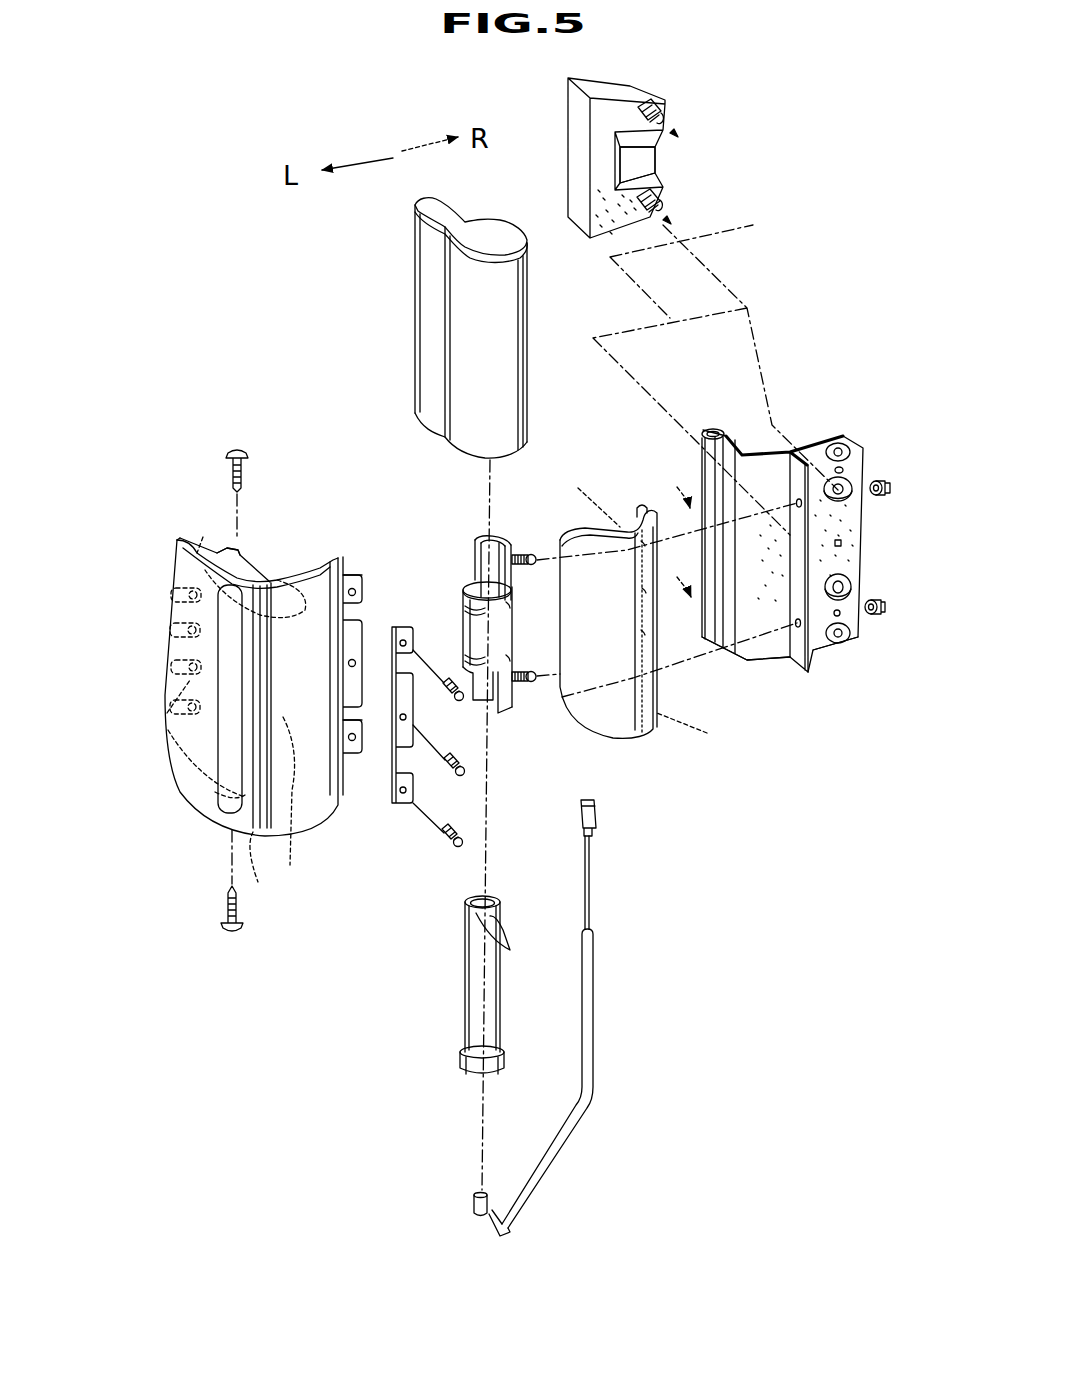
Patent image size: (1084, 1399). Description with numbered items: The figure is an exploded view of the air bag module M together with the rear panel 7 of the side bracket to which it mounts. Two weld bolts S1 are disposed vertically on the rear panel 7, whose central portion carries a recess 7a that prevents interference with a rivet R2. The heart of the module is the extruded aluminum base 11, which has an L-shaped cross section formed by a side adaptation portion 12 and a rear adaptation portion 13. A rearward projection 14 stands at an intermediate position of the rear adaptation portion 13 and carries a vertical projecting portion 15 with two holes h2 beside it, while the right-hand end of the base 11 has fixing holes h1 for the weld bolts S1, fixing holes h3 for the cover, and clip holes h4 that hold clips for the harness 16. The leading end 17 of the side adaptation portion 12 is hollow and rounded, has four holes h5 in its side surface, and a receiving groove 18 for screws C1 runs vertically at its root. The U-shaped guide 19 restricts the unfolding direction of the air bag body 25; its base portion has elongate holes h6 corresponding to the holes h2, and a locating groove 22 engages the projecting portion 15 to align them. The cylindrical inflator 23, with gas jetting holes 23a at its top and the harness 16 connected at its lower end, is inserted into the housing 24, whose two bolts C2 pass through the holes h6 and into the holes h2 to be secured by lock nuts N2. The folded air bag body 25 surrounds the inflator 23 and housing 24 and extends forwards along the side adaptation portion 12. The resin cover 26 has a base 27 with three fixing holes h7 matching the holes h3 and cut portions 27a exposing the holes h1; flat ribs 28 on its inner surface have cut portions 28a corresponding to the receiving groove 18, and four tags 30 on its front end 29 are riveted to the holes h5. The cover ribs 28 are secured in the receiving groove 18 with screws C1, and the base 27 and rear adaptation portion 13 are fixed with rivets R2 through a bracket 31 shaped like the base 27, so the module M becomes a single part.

The rear panel 7 is at (650, 98).
The recess 7a is at (645, 152).
The weld bolts S1 is at (660, 110).
The base 11 is at (799, 566).
The side adaptation portion 12 is at (750, 455).
The rear adaptation portion 13 is at (836, 440).
The rearward projection 14 is at (808, 670).
The projecting portion 15 is at (770, 640).
The harness 16 is at (592, 1017).
The leading end 17 is at (710, 429).
The receiving groove 18 is at (728, 434).
The guide 19 is at (616, 498).
The locating groove 22 is at (646, 510).
The inflator 23 is at (477, 985).
The gas jetting holes 23a is at (510, 949).
The housing 24 is at (453, 580).
The air bag body 25 is at (404, 332).
The cover 26 is at (215, 694).
The base 27 is at (373, 690).
The cut portions 27a is at (367, 607).
The rib 28 is at (247, 563).
The cut portion 28a is at (240, 553).
The front end 29 is at (180, 538).
The tags 30 is at (204, 535).
The bracket 31 is at (400, 815).
The screws C1 is at (237, 448).
The bolts C2 is at (521, 552).
The rivets R2 is at (454, 700).
The lock nuts N2 is at (887, 486).
The fixing holes h1 is at (850, 490).
The holes h2 is at (797, 499).
The fixing holes h3 is at (842, 469).
The clip holes h4 is at (848, 443).
The holes h5 is at (680, 527).
The elongate holes h6 is at (647, 608).
The fixing holes h7 is at (352, 590).
The air bag module M is at (292, 937).